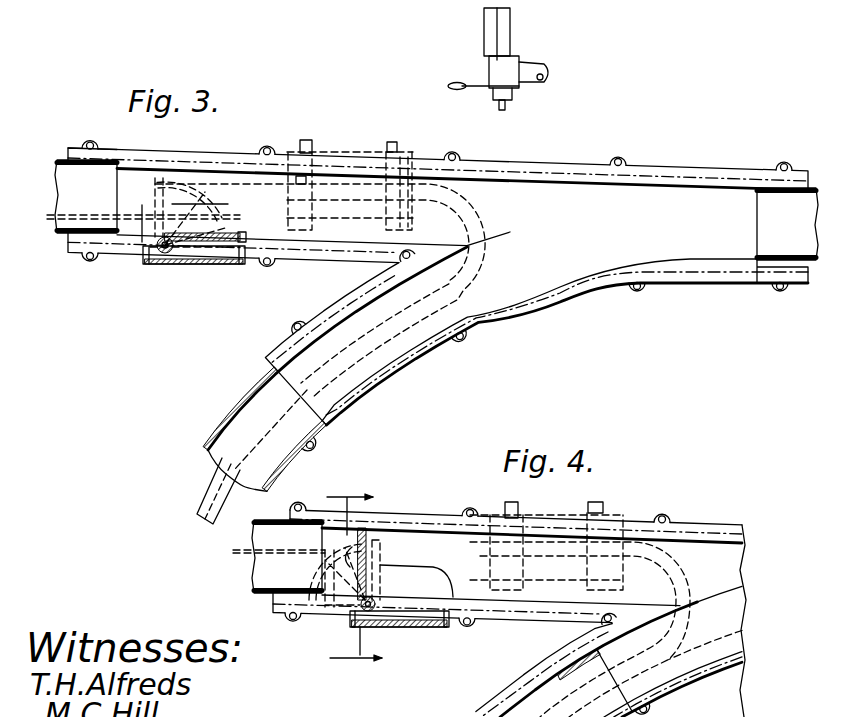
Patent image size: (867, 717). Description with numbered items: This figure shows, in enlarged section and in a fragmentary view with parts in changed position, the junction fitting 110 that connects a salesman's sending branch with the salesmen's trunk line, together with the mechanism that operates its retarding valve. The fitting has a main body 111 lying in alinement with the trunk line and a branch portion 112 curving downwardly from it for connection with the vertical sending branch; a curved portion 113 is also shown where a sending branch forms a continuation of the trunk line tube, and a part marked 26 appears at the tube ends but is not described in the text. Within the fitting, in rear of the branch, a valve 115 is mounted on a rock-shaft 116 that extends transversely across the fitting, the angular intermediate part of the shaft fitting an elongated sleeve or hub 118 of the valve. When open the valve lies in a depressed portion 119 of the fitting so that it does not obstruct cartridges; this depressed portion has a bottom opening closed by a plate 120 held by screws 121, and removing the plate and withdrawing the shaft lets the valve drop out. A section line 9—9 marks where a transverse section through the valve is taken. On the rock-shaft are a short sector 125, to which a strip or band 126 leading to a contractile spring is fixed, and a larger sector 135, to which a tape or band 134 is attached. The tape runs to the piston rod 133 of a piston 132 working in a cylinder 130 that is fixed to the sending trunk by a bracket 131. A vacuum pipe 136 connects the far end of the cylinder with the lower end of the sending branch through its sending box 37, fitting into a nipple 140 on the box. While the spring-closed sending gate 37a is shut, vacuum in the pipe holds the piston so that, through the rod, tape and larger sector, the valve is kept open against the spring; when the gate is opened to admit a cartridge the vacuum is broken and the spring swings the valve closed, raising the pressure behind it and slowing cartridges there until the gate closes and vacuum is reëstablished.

In FIG. 3, the coupling 26 is at (808, 262).
In FIG. 4, the coupling 26 is at (256, 528).
In FIG. 3, the sending box 37 is at (482, 64).
In FIG. 3, the sending gate 37a is at (487, 88).
In FIG. 3, the nipple 140 is at (515, 72).
In FIG. 4, the section line 9— 9 is at (354, 581).
In FIG. 3, the junction fitting 110 is at (573, 156).
In FIG. 4, the junction fitting 110 is at (410, 485).
In FIG. 3, the main body 111 is at (650, 200).
In FIG. 4, the main body 111 is at (437, 537).
In FIG. 3, the branch portion 112 is at (407, 340).
In FIG. 4, the branch portion 112 is at (603, 660).
In FIG. 3, the curved portion 113 is at (228, 426).
In FIG. 3, the valve 115 is at (190, 247).
In FIG. 4, the valve 115 is at (360, 528).
In FIG. 3, the rock-shaft 116 is at (172, 257).
In FIG. 4, the rock-shaft 116 is at (400, 627).
In FIG. 3, the sleeve or hub 118 is at (158, 246).
In FIG. 4, the sleeve or hub 118 is at (363, 625).
In FIG. 3, the depressed portion 119 is at (244, 262).
In FIG. 4, the depressed portion 119 is at (457, 623).
In FIG. 3, the plate 120 is at (215, 265).
In FIG. 4, the plate 120 is at (373, 627).
In FIG. 3, the screws 121 is at (160, 255).
In FIG. 4, the screws 121 is at (343, 630).
In FIG. 3, the short sector 125 is at (232, 240).
In FIG. 3, the strip or band 126 is at (47, 223).
In FIG. 4, the strip or band 126 is at (260, 569).
In FIG. 3, the cylinder 130 is at (348, 155).
In FIG. 4, the cylinder 130 is at (548, 513).
In FIG. 3, the bracket 131 is at (305, 140).
In FIG. 4, the bracket 131 is at (598, 507).
In FIG. 3, the piston 132 is at (404, 163).
In FIG. 3, the piston rod 133 is at (298, 180).
In FIG. 3, the tape or band 134 is at (207, 178).
In FIG. 4, the tape or band 134 is at (337, 572).
In FIG. 3, the larger sector 135 is at (172, 180).
In FIG. 4, the larger sector 135 is at (333, 613).
In FIG. 3, the vacuum pipe 136 is at (213, 493).
In FIG. 4, the vacuum pipe 136 is at (577, 700).